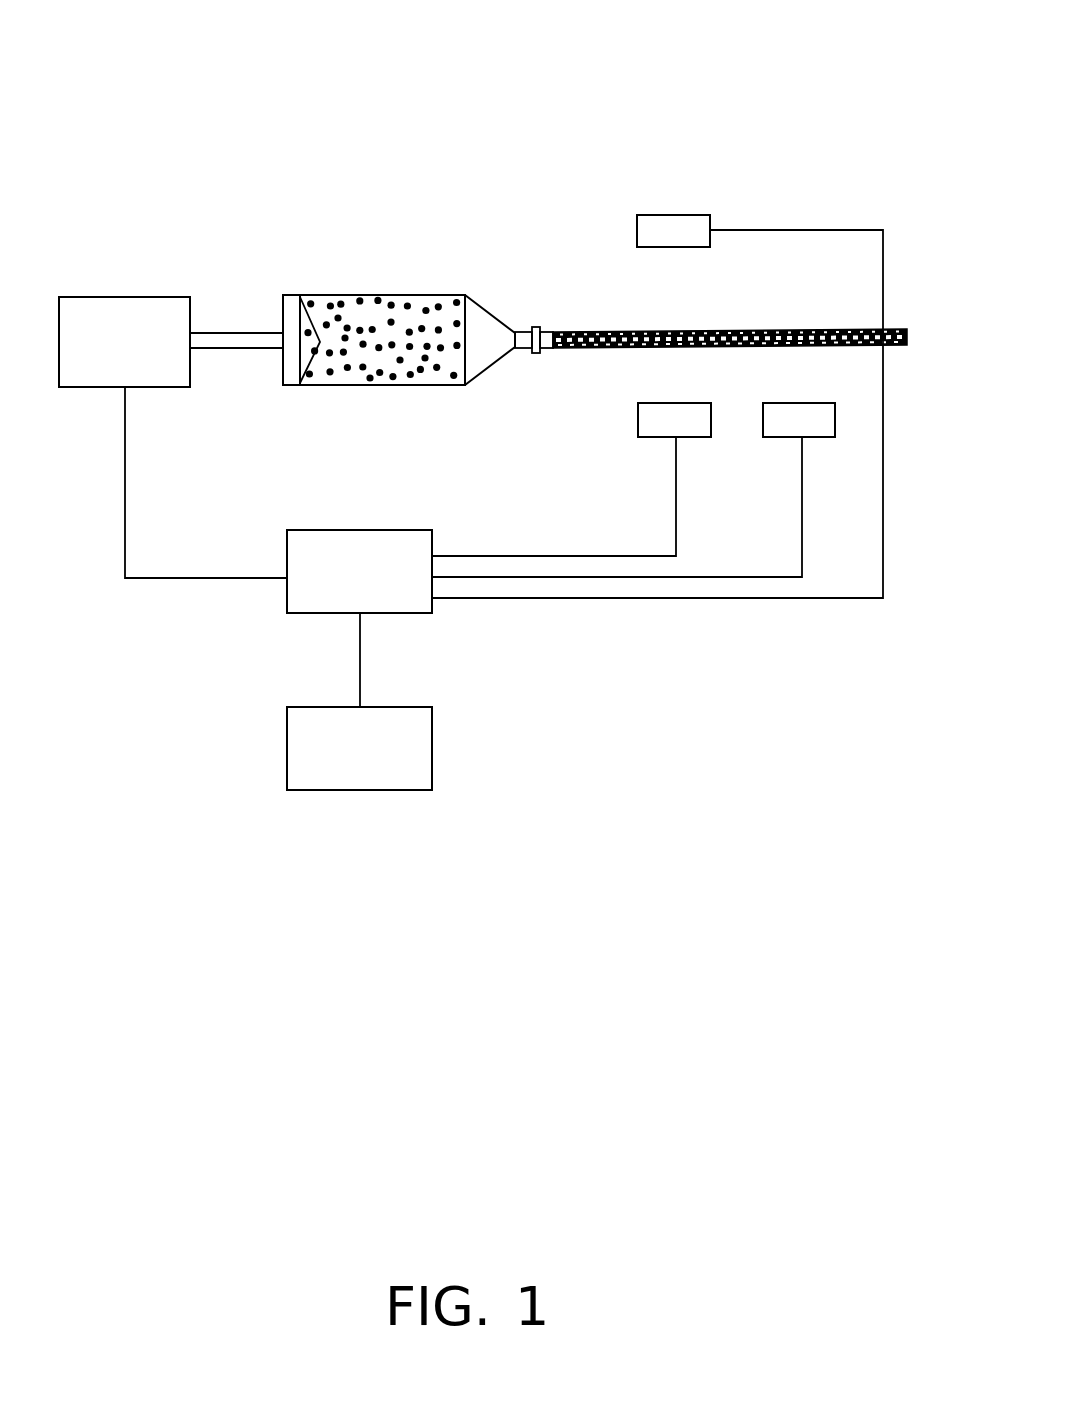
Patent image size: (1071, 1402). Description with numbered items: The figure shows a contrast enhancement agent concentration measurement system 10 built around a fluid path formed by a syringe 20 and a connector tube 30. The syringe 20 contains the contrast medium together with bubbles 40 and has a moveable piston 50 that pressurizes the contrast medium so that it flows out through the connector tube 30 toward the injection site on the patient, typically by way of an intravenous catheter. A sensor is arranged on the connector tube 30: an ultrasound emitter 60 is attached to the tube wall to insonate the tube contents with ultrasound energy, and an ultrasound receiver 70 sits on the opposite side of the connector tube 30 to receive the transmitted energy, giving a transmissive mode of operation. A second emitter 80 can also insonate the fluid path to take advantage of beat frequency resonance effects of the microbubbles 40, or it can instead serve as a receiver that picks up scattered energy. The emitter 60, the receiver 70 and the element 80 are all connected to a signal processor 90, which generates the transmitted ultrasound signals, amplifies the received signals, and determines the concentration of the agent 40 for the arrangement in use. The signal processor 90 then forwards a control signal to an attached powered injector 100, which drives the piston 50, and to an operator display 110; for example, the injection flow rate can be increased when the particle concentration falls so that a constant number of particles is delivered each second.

The system 10 is at (652, 103).
The syringe 20 is at (355, 296).
The connector tube 30 is at (628, 332).
The bubbles 40 is at (428, 300).
The moveable piston 50 is at (301, 297).
The ultrasound emitter 60 is at (692, 437).
The ultrasound receiver 70 is at (676, 214).
The second emitter 80 is at (822, 437).
The signal processor 90 is at (362, 530).
The powered injector 100 is at (125, 290).
The operator display 110 is at (398, 750).